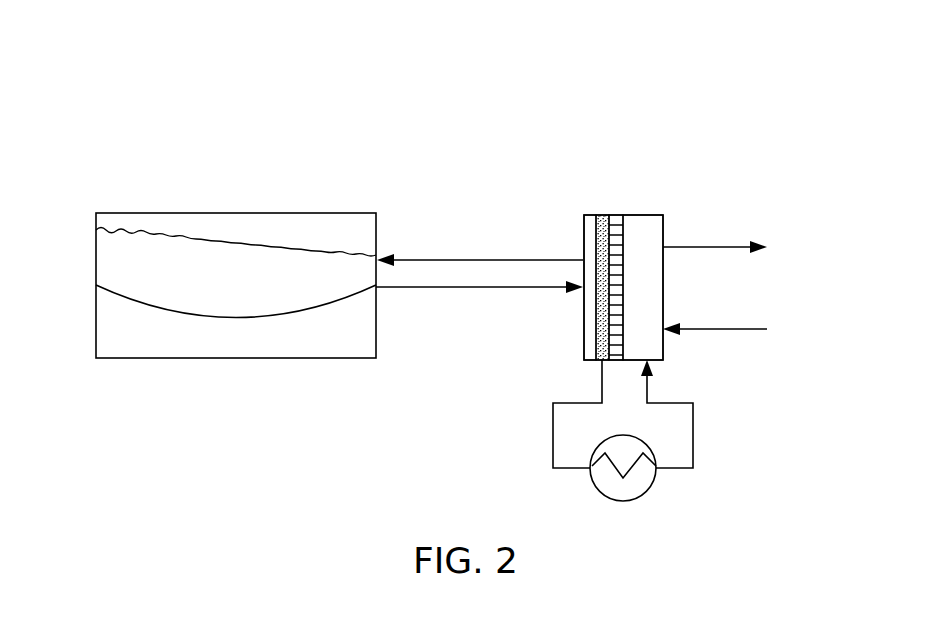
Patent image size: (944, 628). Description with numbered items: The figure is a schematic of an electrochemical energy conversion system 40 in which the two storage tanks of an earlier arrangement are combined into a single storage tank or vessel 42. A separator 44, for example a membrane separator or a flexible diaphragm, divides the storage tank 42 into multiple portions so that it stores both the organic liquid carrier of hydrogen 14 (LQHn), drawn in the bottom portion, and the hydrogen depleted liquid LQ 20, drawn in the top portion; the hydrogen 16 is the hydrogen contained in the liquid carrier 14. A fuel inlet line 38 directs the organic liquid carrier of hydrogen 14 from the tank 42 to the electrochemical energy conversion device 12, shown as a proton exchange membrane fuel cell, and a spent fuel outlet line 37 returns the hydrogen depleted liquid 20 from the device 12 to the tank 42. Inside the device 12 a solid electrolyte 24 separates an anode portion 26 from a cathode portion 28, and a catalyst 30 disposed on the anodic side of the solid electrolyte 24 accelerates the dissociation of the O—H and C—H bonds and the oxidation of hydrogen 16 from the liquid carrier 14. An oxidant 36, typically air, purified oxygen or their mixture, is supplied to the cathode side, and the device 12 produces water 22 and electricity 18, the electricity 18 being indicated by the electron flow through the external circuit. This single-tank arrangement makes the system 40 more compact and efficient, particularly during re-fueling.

The electrochemical energy conversion system 40 is at (140, 88).
The storage tank or vessel 42 is at (224, 220).
The hydrogen depleted liquid LQ 20 is at (208, 279).
The separator 44 is at (117, 295).
The organic liquid carrier of hydrogen LQHn 14 is at (248, 347).
The hydrogen 16 is at (317, 347).
The spent fuel outlet line 37 is at (441, 258).
The fuel inlet line 38 is at (480, 290).
The electrochemical energy conversion device 12 is at (565, 368).
The catalyst 30 is at (601, 214).
The solid electrolyte 24 is at (617, 213).
The anode portion 26 is at (588, 345).
The cathode portion 28 is at (663, 352).
The water 22 is at (740, 243).
The oxidant 36 is at (740, 327).
The electricity 18 is at (648, 492).